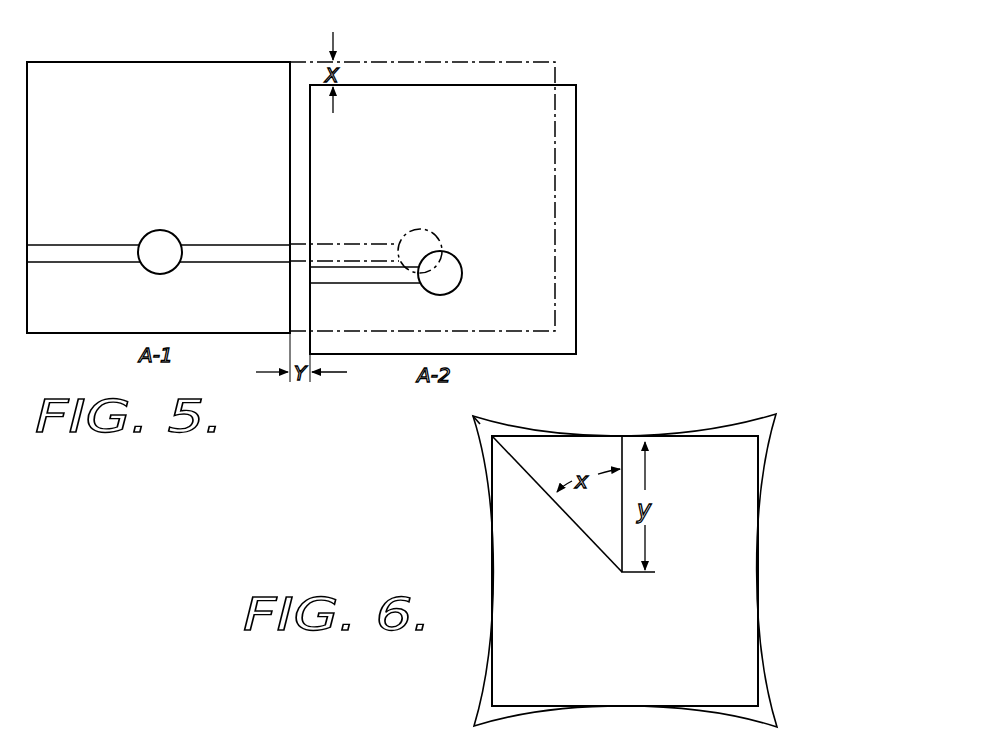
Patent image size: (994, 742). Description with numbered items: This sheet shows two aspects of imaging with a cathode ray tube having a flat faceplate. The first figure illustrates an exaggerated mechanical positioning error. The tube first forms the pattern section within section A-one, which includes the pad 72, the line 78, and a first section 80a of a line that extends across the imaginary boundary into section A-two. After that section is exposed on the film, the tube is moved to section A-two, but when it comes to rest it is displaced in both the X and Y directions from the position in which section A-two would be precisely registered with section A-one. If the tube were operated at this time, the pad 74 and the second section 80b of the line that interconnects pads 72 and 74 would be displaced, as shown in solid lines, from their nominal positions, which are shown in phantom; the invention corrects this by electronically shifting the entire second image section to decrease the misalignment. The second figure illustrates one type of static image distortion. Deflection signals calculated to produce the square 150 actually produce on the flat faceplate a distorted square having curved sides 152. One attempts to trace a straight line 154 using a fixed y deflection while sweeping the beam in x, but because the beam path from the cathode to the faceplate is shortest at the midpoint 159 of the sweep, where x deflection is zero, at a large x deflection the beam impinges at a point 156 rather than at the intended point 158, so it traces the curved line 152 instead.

In FIG. 5, the pad 72 is at (163, 230).
In FIG. 5, the pad 74 is at (462, 268).
In FIG. 5, the line 78 is at (93, 244).
In FIG. 5, the first section of the line 80a is at (250, 244).
In FIG. 5, the second section of the line 80b is at (336, 284).
In FIG. 6, the square 150 is at (740, 682).
In FIG. 6, the curved sides 152 is at (545, 428).
In FIG. 6, the straight line 154 is at (678, 440).
In FIG. 6, the point 156 is at (478, 418).
In FIG. 6, the point 158 is at (509, 444).
In FIG. 6, the midpoint 159 is at (623, 436).